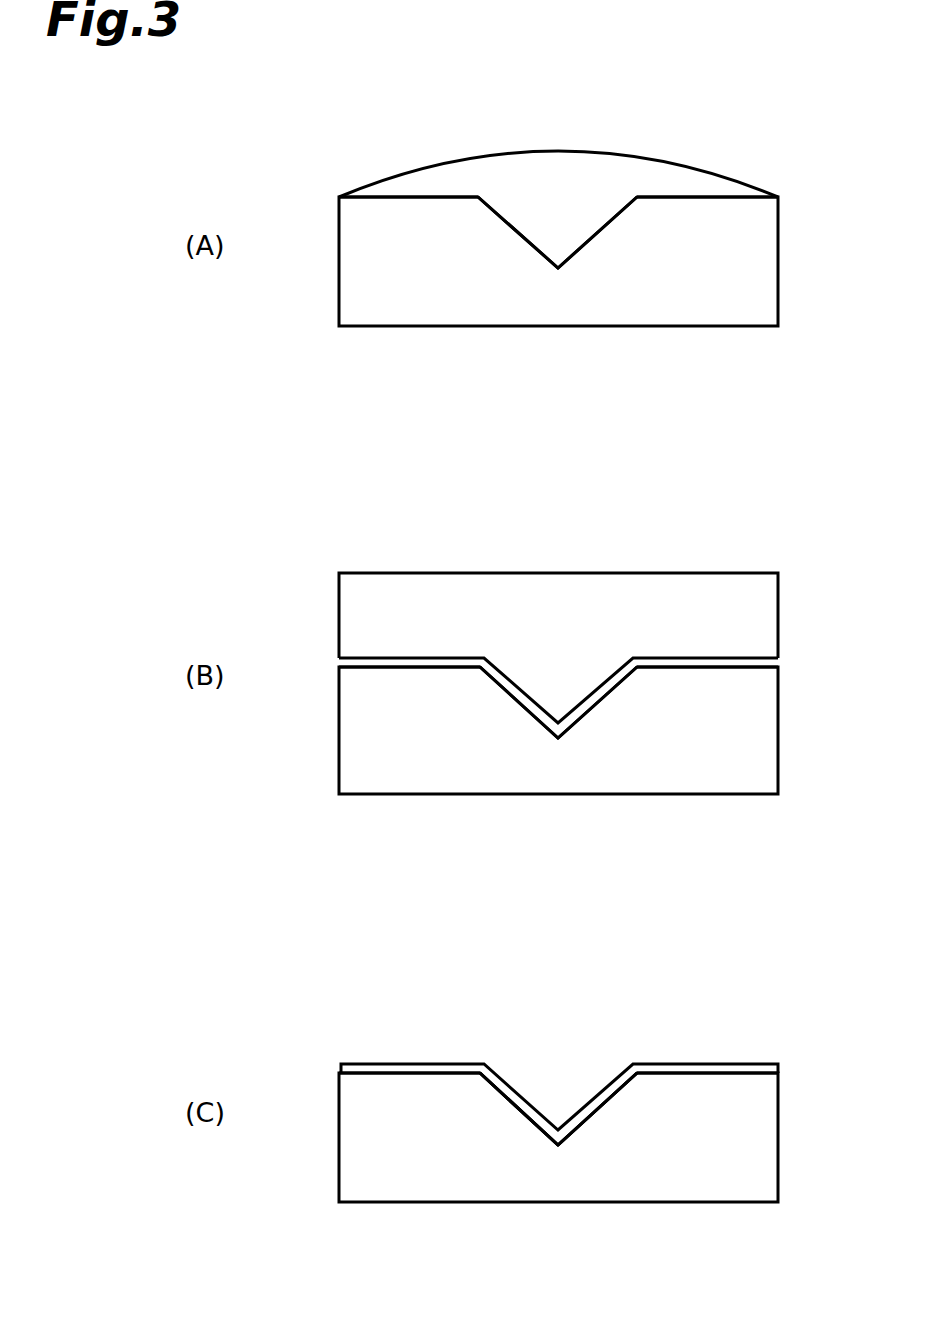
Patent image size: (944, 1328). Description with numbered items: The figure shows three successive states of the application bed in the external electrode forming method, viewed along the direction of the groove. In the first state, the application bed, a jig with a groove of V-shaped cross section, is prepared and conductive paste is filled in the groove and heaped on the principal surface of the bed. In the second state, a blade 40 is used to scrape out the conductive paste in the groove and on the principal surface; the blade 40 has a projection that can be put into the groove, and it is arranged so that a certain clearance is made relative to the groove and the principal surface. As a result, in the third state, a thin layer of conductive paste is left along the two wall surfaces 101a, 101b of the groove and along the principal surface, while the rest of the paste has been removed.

The blade 40 is at (758, 613).
The wall surface 101a is at (500, 1088).
The wall surface 101b is at (568, 1127).